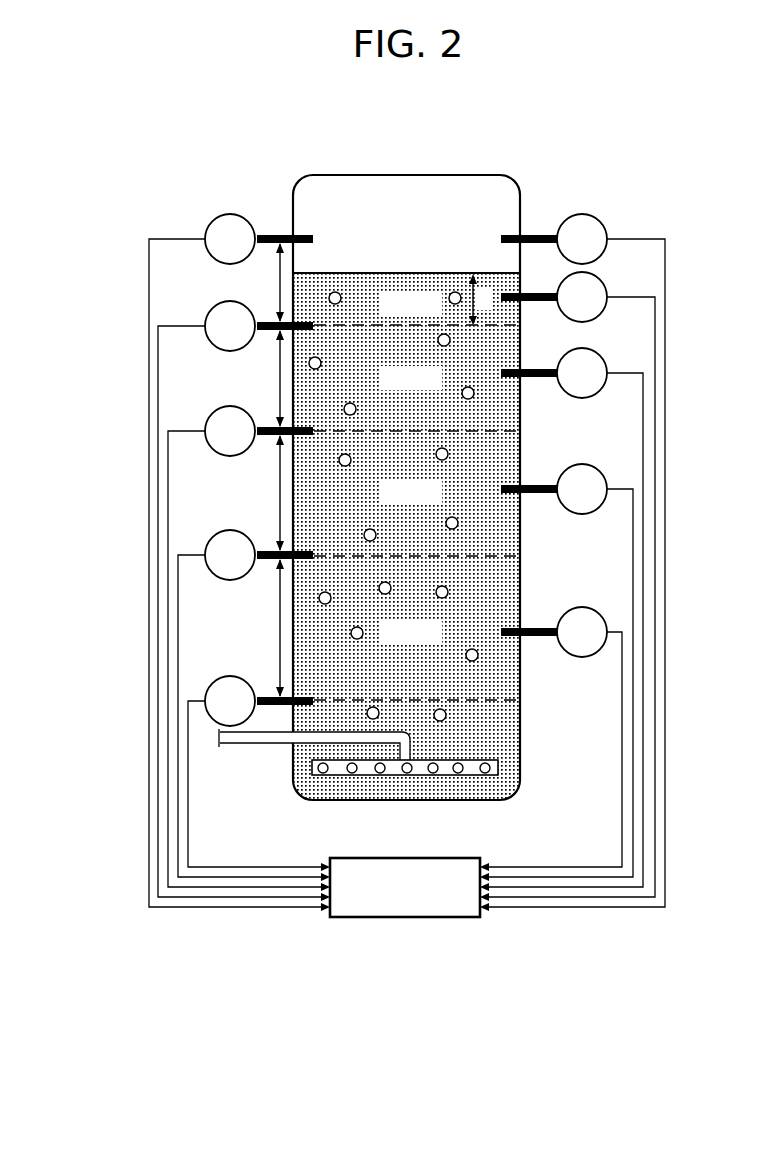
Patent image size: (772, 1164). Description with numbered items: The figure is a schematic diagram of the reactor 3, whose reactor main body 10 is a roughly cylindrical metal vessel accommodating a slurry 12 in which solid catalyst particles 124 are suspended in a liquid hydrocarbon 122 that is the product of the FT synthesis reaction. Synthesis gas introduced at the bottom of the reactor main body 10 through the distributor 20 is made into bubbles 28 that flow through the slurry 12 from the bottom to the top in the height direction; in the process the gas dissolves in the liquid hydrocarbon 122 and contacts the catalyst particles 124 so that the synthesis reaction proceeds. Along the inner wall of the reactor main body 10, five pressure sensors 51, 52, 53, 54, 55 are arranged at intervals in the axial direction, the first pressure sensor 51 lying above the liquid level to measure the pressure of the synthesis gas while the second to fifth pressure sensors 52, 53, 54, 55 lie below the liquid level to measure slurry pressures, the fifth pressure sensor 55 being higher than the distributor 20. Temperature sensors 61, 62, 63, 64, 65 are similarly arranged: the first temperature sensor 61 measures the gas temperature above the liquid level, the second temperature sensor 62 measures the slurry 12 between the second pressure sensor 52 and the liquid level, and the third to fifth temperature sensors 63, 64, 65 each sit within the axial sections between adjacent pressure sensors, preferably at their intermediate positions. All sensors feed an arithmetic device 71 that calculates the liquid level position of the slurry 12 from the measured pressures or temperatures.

The reactor 3 is at (291, 170).
The reactor main body 10 is at (520, 687).
The slurry 12 is at (76, 752).
The liquid hydrocarbon 122 is at (307, 797).
The solid catalyst particles 124 is at (297, 755).
The distributor 20 is at (420, 753).
The bubbles 28 is at (447, 593).
The first pressure sensor 51 is at (258, 232).
The second pressure sensor 52 is at (258, 319).
The third pressure sensor 53 is at (258, 424).
The fourth pressure sensor 54 is at (258, 548).
The fifth pressure sensor 55 is at (258, 694).
The first temperature sensor 61 is at (564, 256).
The second temperature sensor 62 is at (564, 314).
The third temperature sensor 63 is at (564, 390).
The fourth temperature sensor 64 is at (564, 506).
The fifth temperature sensor 65 is at (564, 649).
The arithmetic device 71 is at (405, 917).